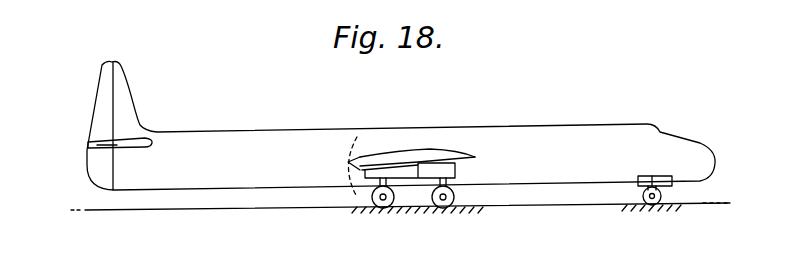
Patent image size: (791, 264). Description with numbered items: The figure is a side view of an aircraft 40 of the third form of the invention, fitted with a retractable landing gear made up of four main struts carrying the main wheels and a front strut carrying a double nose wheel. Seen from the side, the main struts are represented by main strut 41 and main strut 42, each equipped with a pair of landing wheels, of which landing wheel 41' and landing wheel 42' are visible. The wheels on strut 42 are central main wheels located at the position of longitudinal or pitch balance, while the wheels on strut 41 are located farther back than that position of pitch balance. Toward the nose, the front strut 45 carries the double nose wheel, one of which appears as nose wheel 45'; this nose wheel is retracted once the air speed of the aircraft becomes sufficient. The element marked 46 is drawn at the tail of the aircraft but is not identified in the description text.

The aircraft 40 is at (235, 138).
The main strut 41 is at (401, 191).
The landing wheel 41' is at (390, 215).
The main strut 42 is at (479, 208).
The landing wheel 42' is at (453, 215).
The front strut 45 is at (639, 207).
The nose wheel 45' is at (668, 214).
The tail stabilizer 46 is at (102, 147).